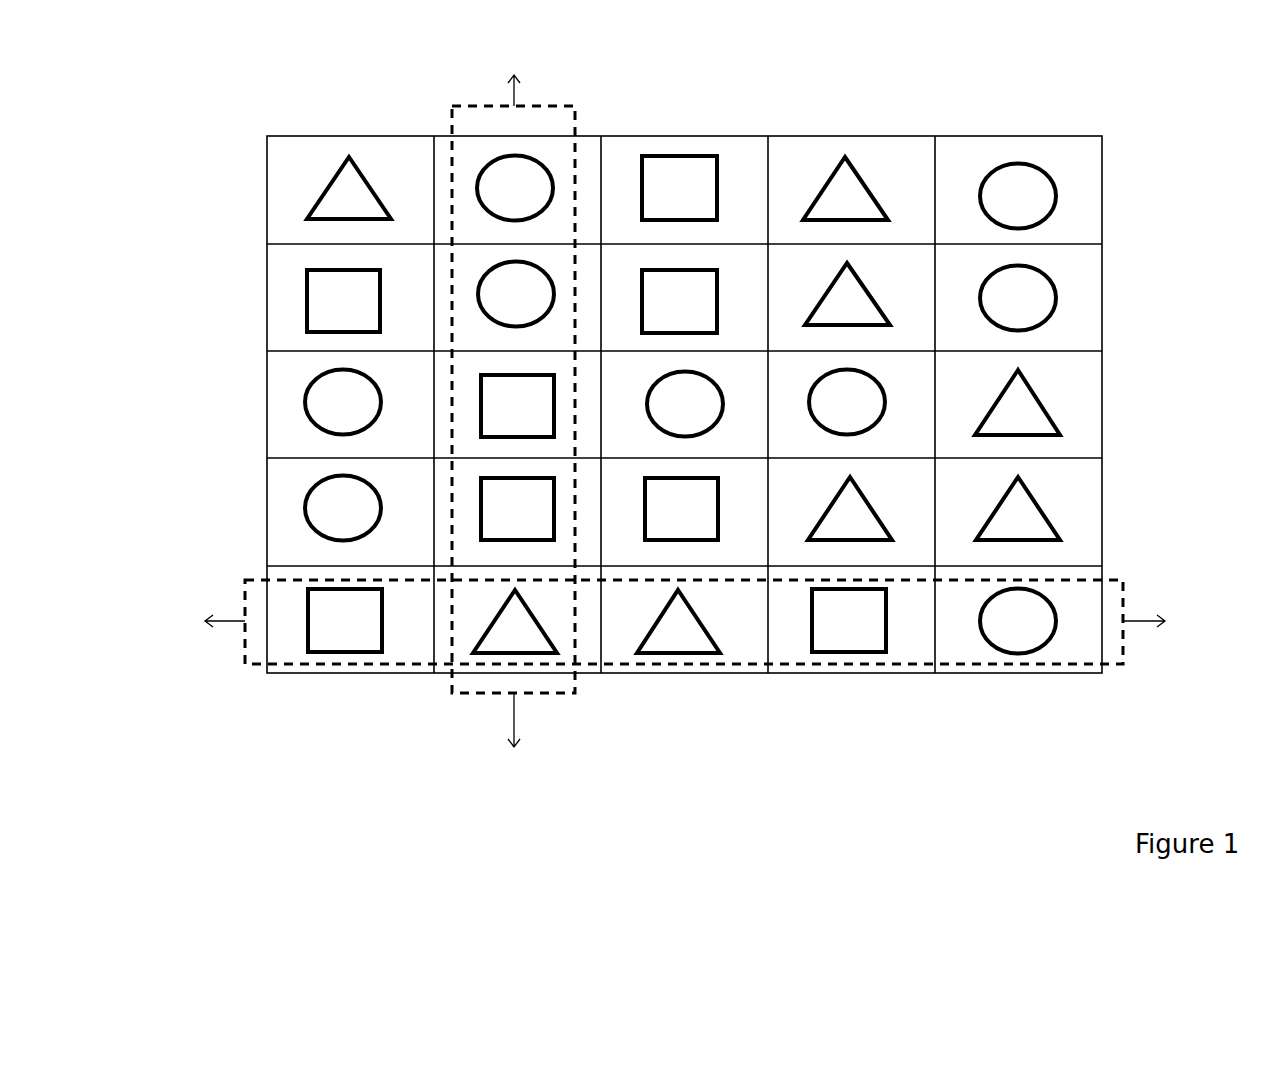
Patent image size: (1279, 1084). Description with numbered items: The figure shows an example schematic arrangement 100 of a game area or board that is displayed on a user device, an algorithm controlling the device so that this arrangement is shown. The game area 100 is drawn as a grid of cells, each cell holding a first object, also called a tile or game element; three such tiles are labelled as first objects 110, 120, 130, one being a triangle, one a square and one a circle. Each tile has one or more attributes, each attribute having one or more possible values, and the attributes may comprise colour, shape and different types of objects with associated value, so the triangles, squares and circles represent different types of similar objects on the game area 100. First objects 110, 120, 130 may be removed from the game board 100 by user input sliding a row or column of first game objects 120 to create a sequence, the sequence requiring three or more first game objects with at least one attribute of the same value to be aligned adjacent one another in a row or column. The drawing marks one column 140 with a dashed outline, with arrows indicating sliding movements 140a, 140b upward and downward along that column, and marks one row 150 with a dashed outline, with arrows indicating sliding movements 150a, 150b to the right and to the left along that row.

The game area 100 is at (627, 484).
The first object 110 is at (325, 190).
The first object 120 is at (305, 303).
The first object 130 is at (305, 405).
The column of the array 140 is at (555, 106).
The upward column direction 140a is at (520, 72).
The downward column direction 140b is at (515, 720).
The row of the array 150 is at (1123, 579).
The rightward row direction 150a is at (1145, 622).
The leftward row direction 150b is at (225, 618).